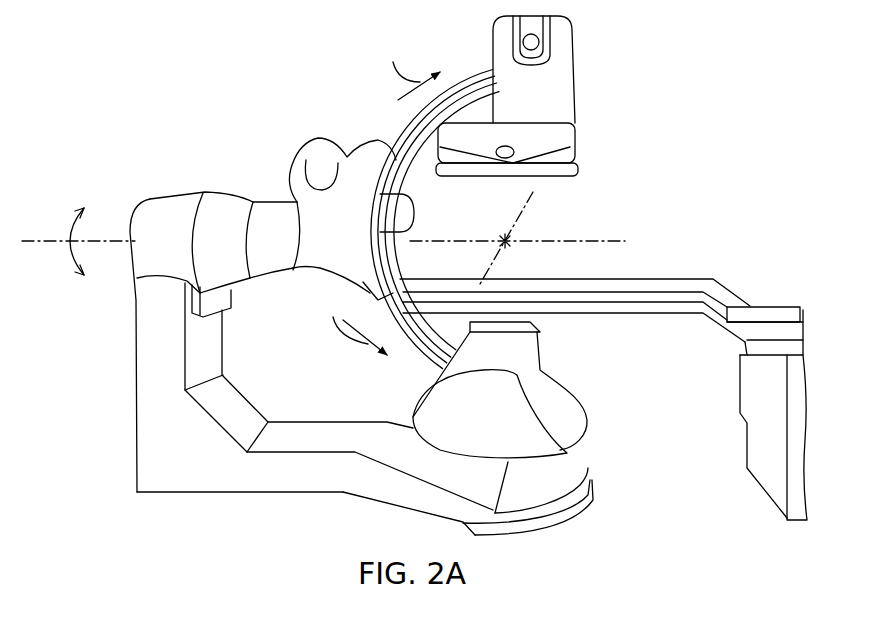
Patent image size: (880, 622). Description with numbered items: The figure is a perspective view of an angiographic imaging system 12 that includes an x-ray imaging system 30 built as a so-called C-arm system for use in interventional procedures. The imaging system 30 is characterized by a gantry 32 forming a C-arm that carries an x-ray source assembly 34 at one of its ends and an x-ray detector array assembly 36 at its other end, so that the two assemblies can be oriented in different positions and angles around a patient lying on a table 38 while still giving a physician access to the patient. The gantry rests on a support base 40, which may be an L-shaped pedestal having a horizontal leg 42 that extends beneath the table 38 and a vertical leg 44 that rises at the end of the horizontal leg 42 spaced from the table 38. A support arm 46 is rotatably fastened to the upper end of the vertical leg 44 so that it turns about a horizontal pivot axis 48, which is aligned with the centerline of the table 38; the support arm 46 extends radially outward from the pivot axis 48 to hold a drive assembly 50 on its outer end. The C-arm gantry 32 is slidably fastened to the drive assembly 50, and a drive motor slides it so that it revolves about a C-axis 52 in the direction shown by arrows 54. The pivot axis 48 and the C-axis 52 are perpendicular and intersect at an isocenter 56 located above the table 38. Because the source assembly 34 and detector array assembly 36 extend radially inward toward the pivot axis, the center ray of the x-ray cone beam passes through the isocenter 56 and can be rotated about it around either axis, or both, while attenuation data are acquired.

The angiographic imaging system 12 is at (137, 78).
The x-ray imaging system 30 is at (801, 153).
The gantry 32 is at (391, 130).
The x-ray source assembly 34 is at (603, 72).
The x-ray detector array assembly 36 is at (574, 153).
The table 38 is at (620, 275).
The support base 40 is at (264, 392).
The horizontal leg 42 is at (353, 420).
The vertical leg 44 is at (135, 410).
The support arm 46 is at (273, 195).
The horizontal pivot axis 48 is at (107, 240).
The drive assembly 50 is at (368, 163).
The C-axis 52 is at (528, 211).
The arrows 54 is at (383, 199).
The isocenter 56 is at (508, 247).